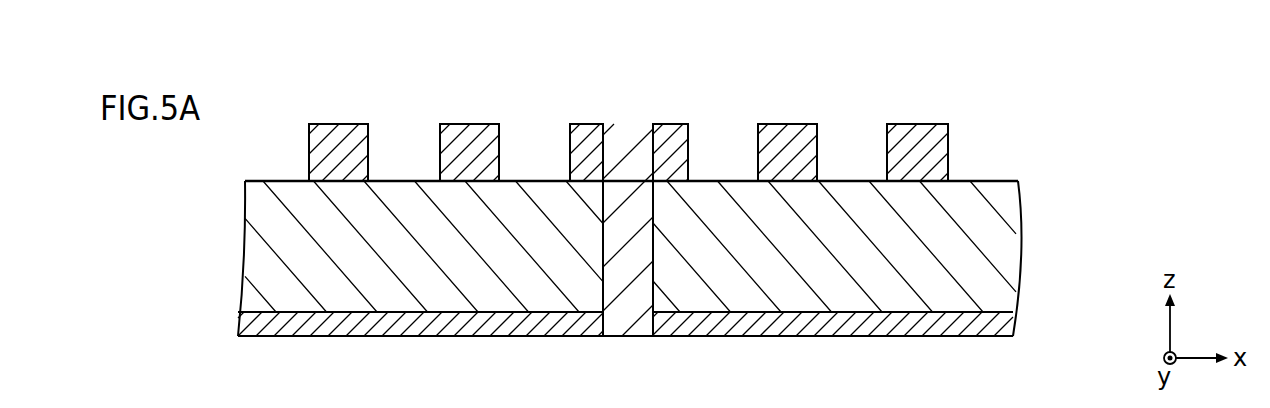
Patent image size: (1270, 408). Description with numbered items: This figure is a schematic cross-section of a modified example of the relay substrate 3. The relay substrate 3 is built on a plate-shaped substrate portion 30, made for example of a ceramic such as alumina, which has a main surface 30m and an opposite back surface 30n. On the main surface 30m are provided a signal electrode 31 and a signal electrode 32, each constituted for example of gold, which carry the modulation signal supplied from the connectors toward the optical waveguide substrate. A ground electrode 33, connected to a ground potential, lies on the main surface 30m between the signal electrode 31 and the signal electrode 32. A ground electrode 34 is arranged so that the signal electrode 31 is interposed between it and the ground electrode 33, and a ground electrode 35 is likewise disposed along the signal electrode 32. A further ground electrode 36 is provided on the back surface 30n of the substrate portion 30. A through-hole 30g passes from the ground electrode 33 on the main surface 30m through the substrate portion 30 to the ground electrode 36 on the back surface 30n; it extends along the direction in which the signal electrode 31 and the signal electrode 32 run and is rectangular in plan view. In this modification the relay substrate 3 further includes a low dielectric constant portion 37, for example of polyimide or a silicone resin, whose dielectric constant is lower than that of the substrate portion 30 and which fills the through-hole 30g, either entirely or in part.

The relay substrate 3 is at (985, 47).
The substrate portion 30 is at (1012, 255).
The main surface 30m is at (1010, 181).
The back surface 30n is at (1005, 315).
The through-hole 30g is at (652, 247).
The signal electrode 31 is at (470, 125).
The signal electrode 32 is at (790, 127).
The ground electrode 33 is at (585, 126).
The ground electrode 34 is at (335, 125).
The ground electrode 35 is at (922, 127).
The ground electrode 36 is at (470, 322).
The low dielectric constant portion 37 is at (631, 325).